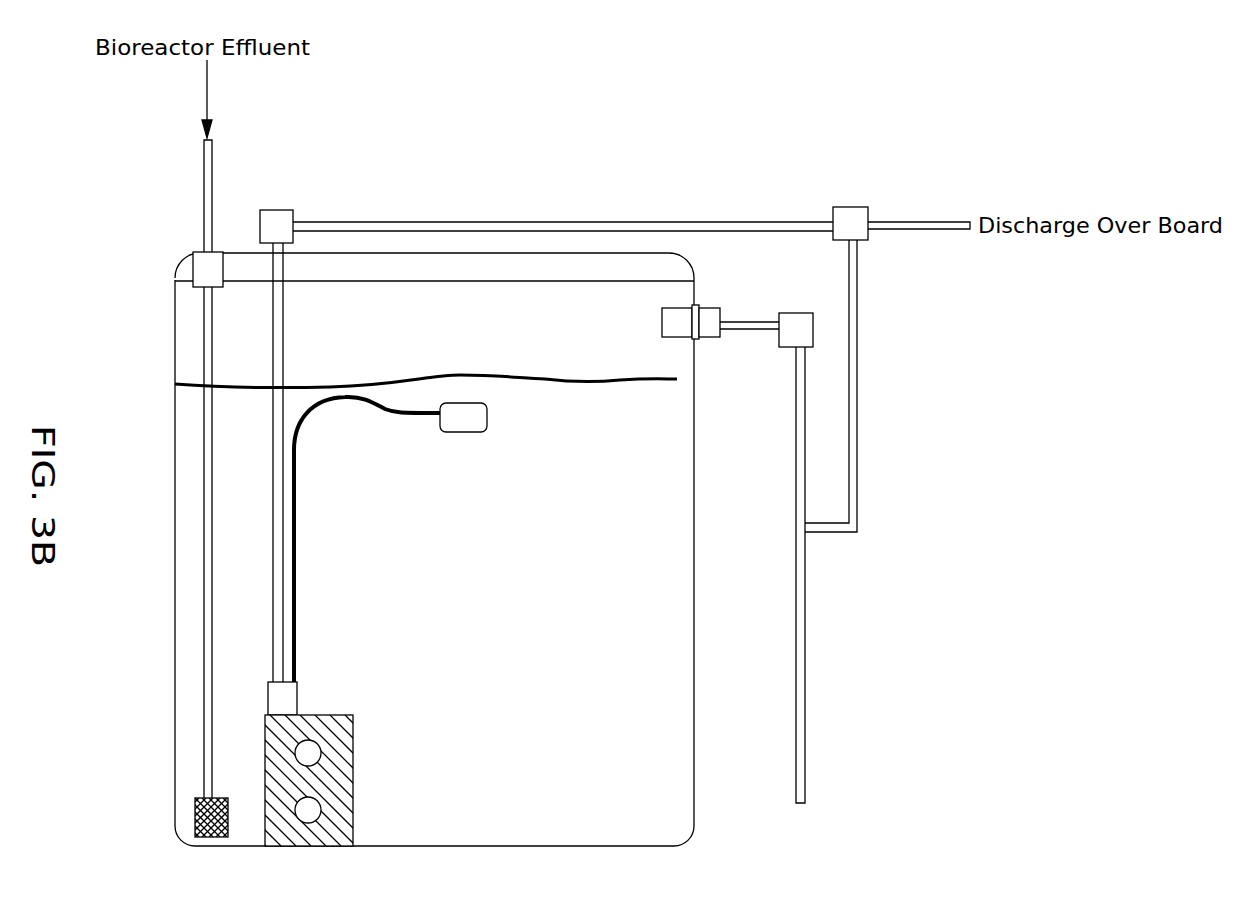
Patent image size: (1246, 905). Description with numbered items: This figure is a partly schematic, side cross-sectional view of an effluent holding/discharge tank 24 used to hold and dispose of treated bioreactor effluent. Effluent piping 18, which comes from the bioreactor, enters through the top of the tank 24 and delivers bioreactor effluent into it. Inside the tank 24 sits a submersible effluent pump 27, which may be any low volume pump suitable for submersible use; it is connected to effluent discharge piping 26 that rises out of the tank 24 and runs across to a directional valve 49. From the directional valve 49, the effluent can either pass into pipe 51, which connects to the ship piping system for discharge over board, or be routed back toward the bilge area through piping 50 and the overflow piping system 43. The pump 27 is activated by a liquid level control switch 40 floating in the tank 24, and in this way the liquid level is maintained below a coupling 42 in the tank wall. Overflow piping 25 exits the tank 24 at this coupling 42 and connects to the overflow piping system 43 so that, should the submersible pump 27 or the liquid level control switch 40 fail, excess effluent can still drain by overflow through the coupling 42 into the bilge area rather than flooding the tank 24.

The effluent piping 18 is at (211, 488).
The effluent holding/discharge tank 24 is at (434, 549).
The overflow piping 25 is at (766, 338).
The effluent discharge piping 26 is at (546, 432).
The submersible effluent pump 27 is at (305, 764).
The liquid level control switch 40 is at (407, 539).
The coupling 42 is at (712, 298).
The overflow piping system 43 is at (818, 575).
The directional valve 49 is at (850, 211).
The piping 50 is at (848, 386).
The pipe 51 is at (919, 212).